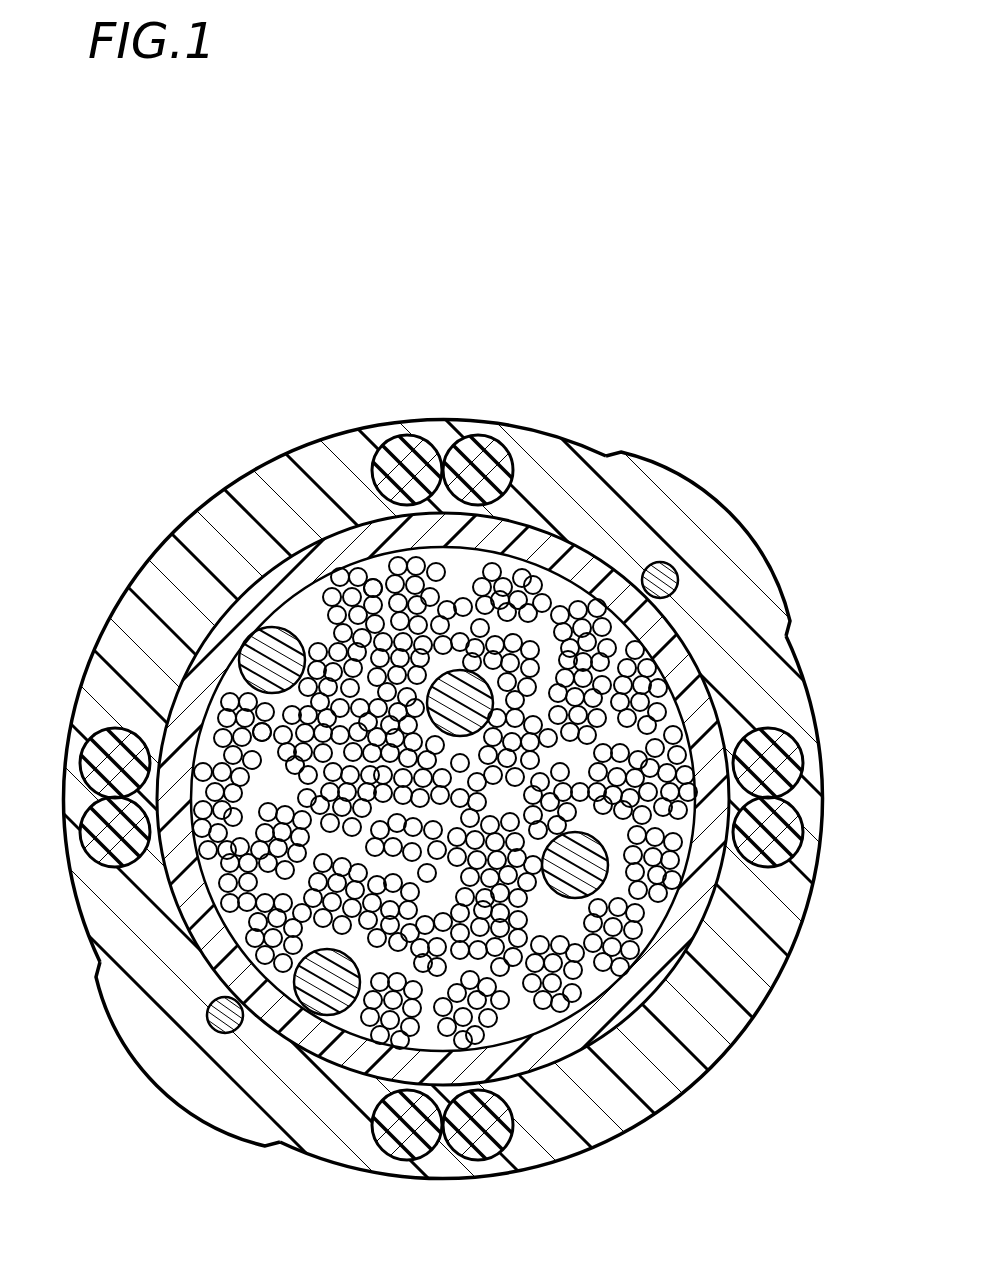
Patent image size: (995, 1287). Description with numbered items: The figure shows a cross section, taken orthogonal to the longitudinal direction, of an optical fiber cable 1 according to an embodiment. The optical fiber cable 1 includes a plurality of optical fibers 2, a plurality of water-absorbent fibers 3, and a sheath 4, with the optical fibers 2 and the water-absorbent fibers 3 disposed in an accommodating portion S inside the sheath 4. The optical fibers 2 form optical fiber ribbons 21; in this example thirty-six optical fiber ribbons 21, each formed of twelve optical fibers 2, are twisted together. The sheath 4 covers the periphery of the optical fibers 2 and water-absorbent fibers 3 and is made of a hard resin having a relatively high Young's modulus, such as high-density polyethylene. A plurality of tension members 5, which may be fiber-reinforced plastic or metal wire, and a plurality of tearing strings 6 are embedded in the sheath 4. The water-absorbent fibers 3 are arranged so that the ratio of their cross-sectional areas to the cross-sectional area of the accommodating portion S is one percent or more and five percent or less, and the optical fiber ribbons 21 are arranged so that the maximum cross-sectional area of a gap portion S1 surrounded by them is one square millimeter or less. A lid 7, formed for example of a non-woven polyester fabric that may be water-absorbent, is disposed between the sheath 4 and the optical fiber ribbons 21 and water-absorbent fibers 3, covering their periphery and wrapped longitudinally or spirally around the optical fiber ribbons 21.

The optical fiber cable 1 is at (497, 730).
The optical fiber 2 is at (421, 716).
The optical fiber ribbon 21 is at (368, 576).
The water-absorbent fiber 3 is at (583, 872).
The sheath 4 is at (773, 677).
The tension member 5 is at (401, 455).
The tearing string 6 is at (663, 574).
The lid 7 is at (680, 628).
The accommodating portion S is at (292, 607).
The gap portion S1 is at (262, 742).